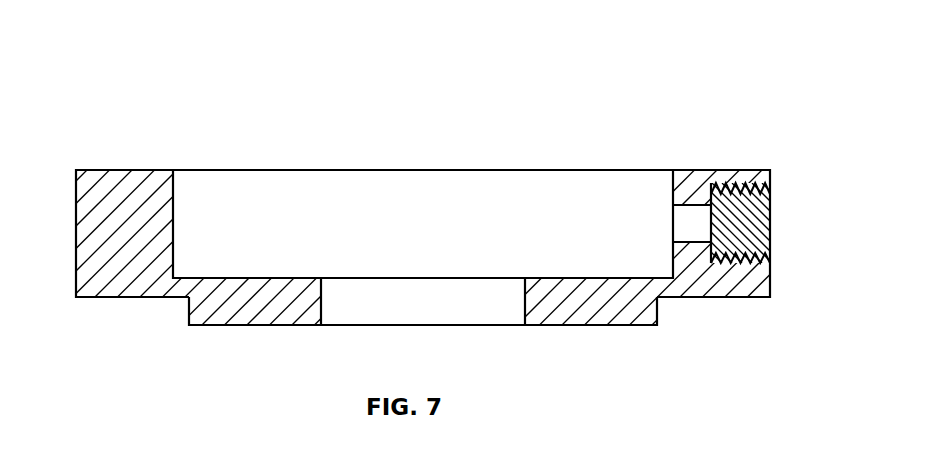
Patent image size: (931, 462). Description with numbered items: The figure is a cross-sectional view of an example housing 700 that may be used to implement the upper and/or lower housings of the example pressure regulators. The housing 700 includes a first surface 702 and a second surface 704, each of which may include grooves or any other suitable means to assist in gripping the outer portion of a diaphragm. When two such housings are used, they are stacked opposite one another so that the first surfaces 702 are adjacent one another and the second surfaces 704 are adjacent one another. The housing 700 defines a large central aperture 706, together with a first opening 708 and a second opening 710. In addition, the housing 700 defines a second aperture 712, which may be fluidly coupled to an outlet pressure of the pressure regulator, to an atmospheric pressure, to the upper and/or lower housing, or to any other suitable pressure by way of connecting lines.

The housing 700 is at (110, 63).
The first surface 702 is at (124, 170).
The second surface 704 is at (238, 326).
The aperture 706 is at (374, 185).
The first opening 708 is at (667, 185).
The second opening 710 is at (323, 312).
The second aperture 712 is at (758, 222).